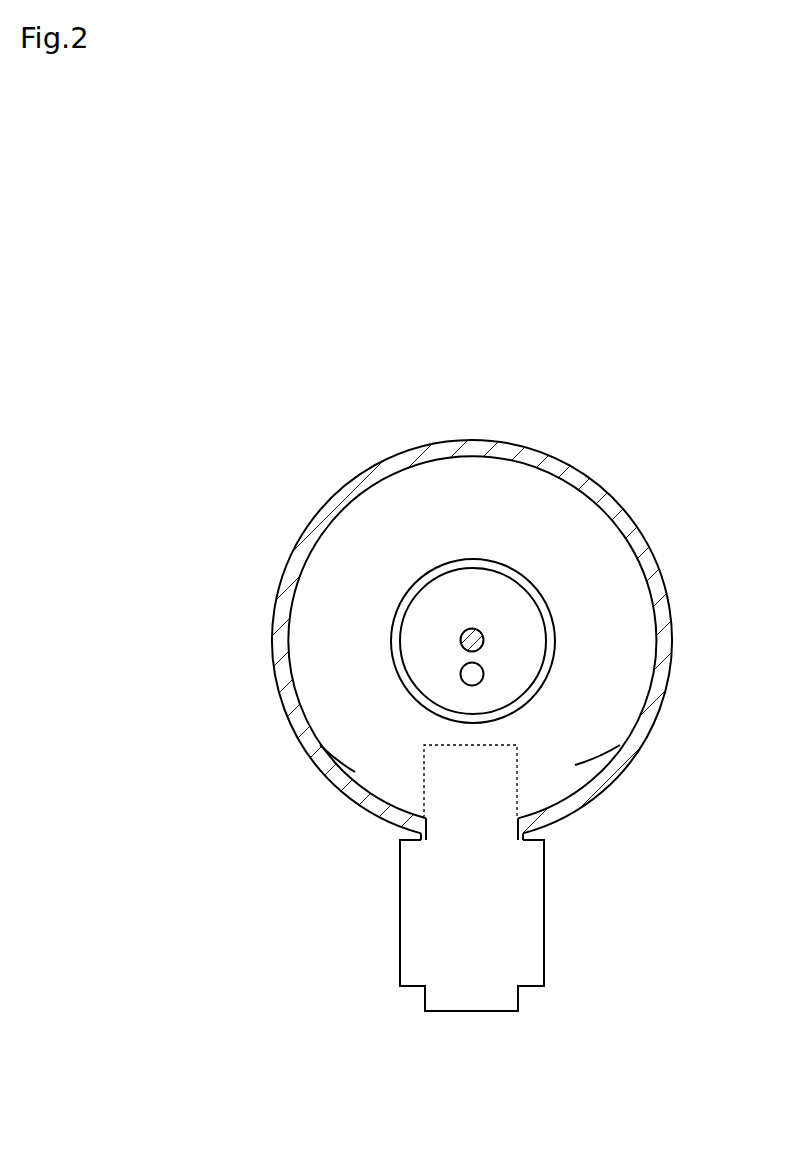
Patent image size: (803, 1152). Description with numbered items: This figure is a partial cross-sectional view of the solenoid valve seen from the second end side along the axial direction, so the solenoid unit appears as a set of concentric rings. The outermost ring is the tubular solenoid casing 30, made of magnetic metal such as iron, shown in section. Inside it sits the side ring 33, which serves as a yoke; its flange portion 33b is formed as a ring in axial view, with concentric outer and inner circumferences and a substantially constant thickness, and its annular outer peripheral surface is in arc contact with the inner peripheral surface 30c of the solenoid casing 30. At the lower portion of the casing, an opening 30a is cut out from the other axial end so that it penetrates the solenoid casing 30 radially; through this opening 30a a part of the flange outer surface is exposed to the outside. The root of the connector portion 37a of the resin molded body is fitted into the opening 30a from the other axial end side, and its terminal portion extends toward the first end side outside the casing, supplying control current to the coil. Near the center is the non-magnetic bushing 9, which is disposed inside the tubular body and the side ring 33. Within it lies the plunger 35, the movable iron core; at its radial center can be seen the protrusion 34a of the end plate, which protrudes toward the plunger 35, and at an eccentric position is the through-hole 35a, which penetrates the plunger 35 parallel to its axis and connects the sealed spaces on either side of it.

The solenoid casing 30 is at (600, 477).
The side ring 33 is at (641, 731).
The flange portion 33b is at (585, 752).
The inner peripheral surface 30c is at (330, 733).
The opening 30a is at (428, 830).
The connector portion 37a is at (520, 940).
The bushing 9 is at (544, 605).
The plunger 35 is at (450, 597).
The protrusion 34a is at (470, 641).
The through-hole 35a is at (474, 678).